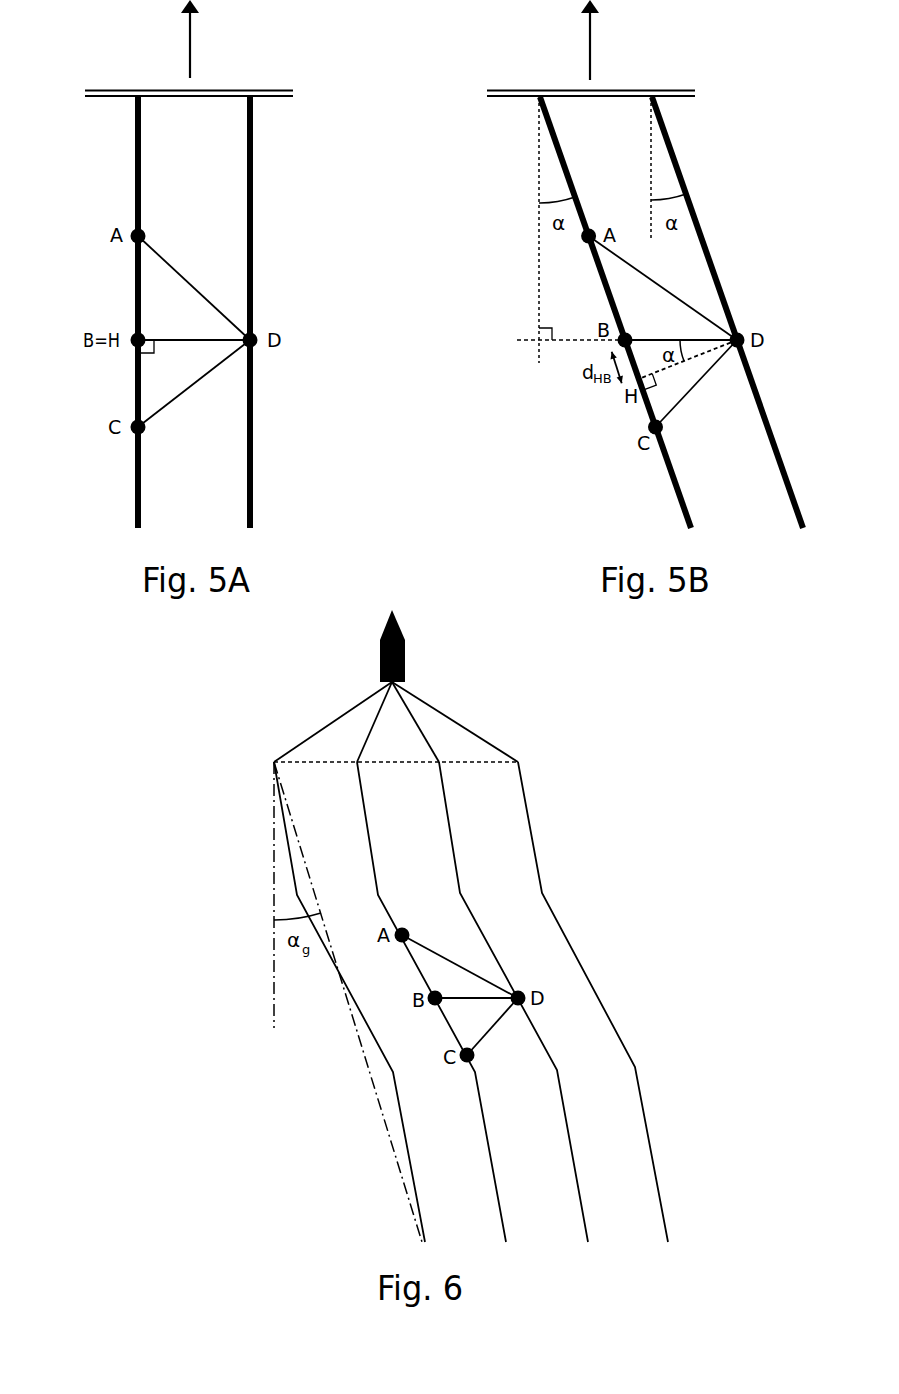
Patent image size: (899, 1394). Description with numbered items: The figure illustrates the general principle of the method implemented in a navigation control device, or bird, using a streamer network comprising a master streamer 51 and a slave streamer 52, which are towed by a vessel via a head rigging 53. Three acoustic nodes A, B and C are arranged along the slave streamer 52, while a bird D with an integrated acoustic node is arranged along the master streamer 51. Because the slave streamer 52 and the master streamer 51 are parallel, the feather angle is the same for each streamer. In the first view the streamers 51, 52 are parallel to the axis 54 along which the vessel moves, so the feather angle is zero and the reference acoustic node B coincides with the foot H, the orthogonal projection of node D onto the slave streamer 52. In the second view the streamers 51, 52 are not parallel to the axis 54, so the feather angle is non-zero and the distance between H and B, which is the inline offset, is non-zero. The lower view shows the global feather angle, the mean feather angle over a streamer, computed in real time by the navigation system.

In FIG. 5A, the master streamer 51 is at (252, 473).
In FIG. 5B, the master streamer 51 is at (788, 473).
In FIG. 5A, the slave streamer 52 is at (137, 482).
In FIG. 5B, the slave streamer 52 is at (673, 483).
In FIG. 5A, the head rigging 53 is at (267, 90).
In FIG. 5B, the head rigging 53 is at (668, 90).
In FIG. 5A, the axis along which the vessel moves 54 is at (190, 37).
In FIG. 5B, the axis along which the vessel moves 54 is at (590, 37).